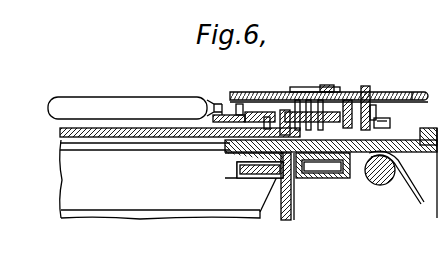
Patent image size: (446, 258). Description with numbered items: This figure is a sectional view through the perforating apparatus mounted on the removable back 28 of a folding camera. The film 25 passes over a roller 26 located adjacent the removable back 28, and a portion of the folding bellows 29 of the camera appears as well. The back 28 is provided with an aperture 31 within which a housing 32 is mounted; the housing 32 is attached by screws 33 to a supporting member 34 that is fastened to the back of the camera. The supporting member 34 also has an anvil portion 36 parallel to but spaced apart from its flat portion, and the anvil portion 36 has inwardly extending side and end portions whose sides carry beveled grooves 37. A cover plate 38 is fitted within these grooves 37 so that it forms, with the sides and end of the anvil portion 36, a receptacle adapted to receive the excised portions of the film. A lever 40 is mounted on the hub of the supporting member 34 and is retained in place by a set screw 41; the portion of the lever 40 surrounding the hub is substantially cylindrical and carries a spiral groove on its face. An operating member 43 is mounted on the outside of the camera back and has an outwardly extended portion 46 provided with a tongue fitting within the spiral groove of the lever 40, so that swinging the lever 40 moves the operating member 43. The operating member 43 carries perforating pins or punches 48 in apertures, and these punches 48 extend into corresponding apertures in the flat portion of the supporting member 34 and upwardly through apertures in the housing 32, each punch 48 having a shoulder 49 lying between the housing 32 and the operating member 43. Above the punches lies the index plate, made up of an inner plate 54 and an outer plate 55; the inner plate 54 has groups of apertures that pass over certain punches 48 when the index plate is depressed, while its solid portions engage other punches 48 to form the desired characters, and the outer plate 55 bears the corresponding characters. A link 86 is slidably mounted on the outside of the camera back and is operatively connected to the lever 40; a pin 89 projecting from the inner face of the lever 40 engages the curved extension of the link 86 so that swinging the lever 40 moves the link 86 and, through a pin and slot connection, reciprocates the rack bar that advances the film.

The film 25 is at (158, 151).
The roller 26 is at (396, 185).
The removable back 28 is at (111, 137).
The folding bellows 29 is at (62, 190).
The aperture 31 is at (366, 183).
The housing 32 is at (372, 96).
The screws 33 is at (383, 124).
The supporting member 34 is at (410, 150).
The anvil portion 36 is at (340, 172).
The beveled grooves 37 is at (299, 178).
The cover plate 38 is at (331, 178).
The lever 40 is at (157, 105).
The set screw 41 is at (330, 90).
The operating member 43 is at (382, 110).
The outwardly extended portion 46 is at (368, 93).
The perforating pins or punches 48 is at (346, 106).
The shoulder 49 is at (303, 88).
The inner plate 54 is at (414, 92).
The outer plate 55 is at (259, 93).
The link 86 is at (221, 101).
The pin 89 is at (223, 146).